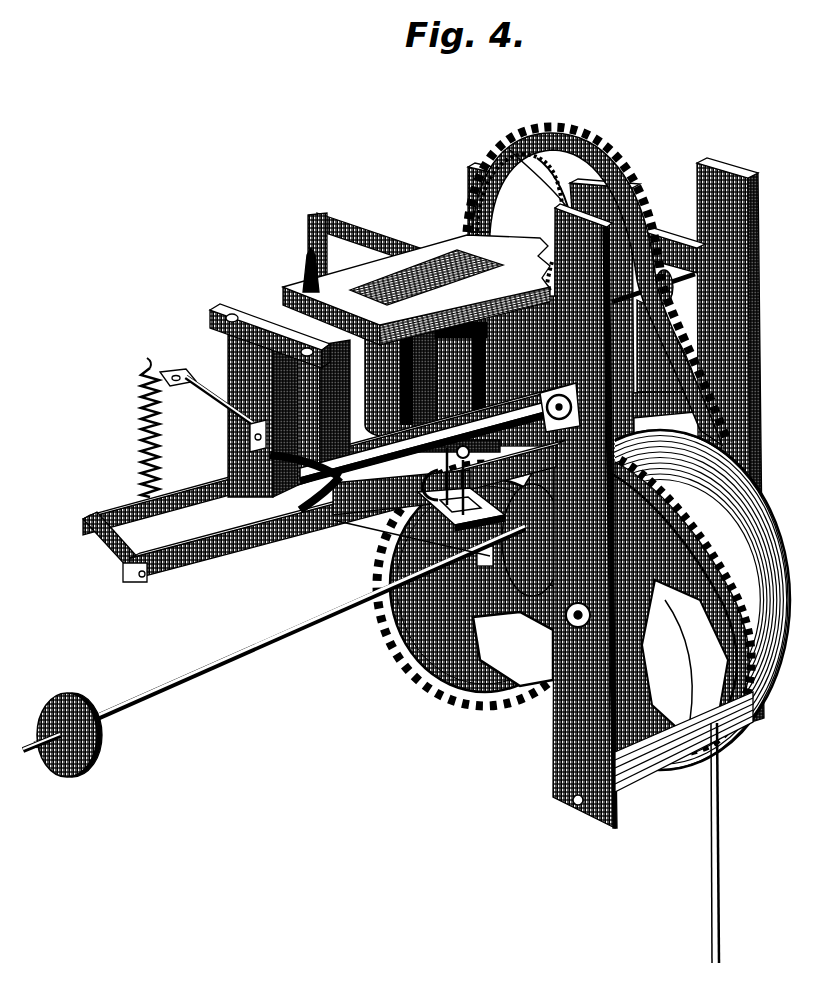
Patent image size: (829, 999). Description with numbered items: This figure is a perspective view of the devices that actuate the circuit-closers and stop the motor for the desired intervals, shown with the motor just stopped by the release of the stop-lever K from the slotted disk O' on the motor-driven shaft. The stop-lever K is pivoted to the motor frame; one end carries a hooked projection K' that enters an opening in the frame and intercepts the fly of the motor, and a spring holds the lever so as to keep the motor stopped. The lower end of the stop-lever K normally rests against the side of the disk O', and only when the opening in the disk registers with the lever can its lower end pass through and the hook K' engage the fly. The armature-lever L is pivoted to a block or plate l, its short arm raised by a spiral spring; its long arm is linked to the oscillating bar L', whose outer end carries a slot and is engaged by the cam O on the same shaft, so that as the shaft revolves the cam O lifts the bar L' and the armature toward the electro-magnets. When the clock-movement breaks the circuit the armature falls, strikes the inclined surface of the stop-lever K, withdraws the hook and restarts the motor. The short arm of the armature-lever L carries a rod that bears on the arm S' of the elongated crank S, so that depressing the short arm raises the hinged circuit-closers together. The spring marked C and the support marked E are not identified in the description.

The stop-lever K is at (651, 516).
The hooked projection K' is at (597, 286).
The armature-lever L is at (425, 461).
The oscillating bar L' is at (411, 518).
The block or plate l is at (446, 480).
The elongated crank S is at (323, 460).
The arm S' is at (344, 511).
The support post E is at (255, 400).
The spring C is at (138, 427).
The cam O is at (485, 585).
The disk O' is at (519, 540).